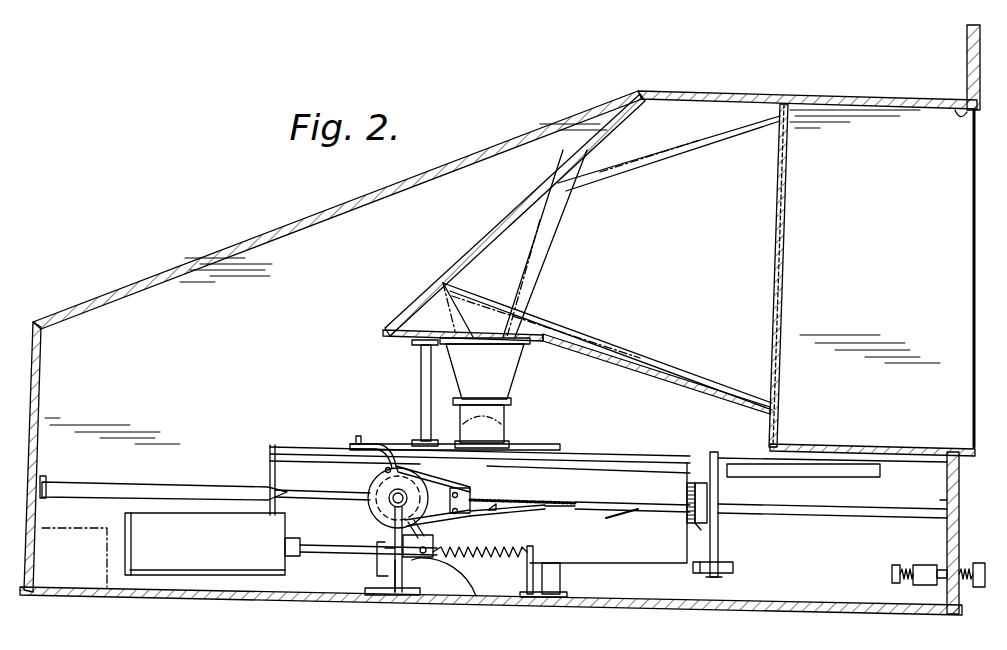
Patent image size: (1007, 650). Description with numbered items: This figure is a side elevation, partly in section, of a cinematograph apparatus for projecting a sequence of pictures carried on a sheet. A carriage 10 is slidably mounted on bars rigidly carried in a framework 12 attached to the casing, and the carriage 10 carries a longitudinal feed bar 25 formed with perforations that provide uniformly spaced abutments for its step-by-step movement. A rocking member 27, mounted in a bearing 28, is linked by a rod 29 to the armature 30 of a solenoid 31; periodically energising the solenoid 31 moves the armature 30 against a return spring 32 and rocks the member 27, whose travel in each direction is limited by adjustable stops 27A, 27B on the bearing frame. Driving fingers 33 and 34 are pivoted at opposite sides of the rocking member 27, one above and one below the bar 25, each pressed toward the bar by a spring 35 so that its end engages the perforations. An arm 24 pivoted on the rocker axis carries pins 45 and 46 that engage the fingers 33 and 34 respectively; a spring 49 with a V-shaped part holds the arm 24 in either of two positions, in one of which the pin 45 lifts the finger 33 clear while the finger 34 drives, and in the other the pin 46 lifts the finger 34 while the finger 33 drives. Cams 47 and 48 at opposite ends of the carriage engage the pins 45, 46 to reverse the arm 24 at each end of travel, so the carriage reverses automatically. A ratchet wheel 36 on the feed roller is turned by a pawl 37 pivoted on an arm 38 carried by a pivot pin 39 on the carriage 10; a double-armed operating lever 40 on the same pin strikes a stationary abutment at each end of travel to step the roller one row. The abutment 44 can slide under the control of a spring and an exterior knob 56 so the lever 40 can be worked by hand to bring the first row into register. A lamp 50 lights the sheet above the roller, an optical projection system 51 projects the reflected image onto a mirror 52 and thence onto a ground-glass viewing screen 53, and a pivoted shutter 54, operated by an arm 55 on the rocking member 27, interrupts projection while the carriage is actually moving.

The carriage 10 is at (714, 452).
The framework 12 is at (37, 322).
The arm 24 is at (496, 509).
The longitudinal feed bar 25 is at (600, 473).
The rocking member 27 is at (372, 505).
The adjustable stop 27A is at (395, 592).
The adjustable stop 27B is at (470, 596).
The bearing 28 is at (412, 578).
The rod 29 is at (327, 545).
The armature 30 is at (285, 547).
The solenoid 31 is at (170, 513).
The return spring 32 is at (510, 560).
The driving finger 33 is at (510, 500).
The driving finger 34 is at (556, 509).
The spring 35 is at (508, 451).
The ratchet wheel 36 is at (710, 503).
The pawl 37 is at (686, 500).
The arm 38 is at (698, 530).
The pivot pin 39 is at (719, 578).
The double-armed operating lever 40 is at (725, 565).
The abutment 44 is at (890, 574).
The pin 45 is at (470, 496).
The pin 46 is at (478, 518).
The cam 47 is at (277, 491).
The cam 48 is at (618, 518).
The spring 49 is at (378, 556).
The lamp 50 is at (510, 428).
The optical projection system 51 is at (512, 360).
The mirror 52 is at (500, 239).
The viewing screen 53 is at (779, 235).
The pivoted shutter 54 is at (388, 447).
The arm 55 is at (358, 447).
The knob 56 is at (950, 565).